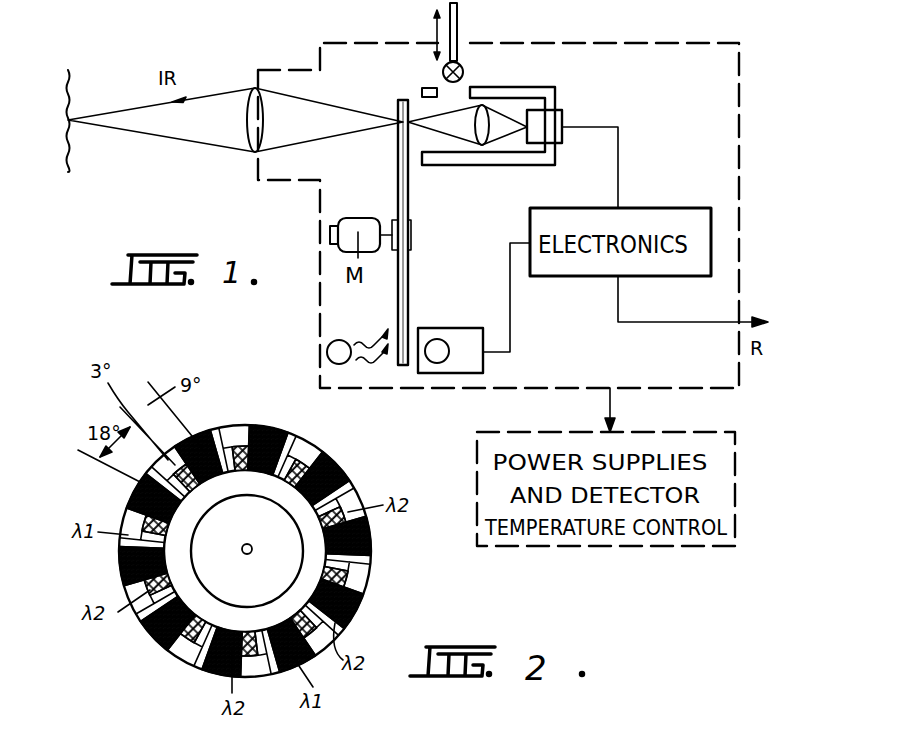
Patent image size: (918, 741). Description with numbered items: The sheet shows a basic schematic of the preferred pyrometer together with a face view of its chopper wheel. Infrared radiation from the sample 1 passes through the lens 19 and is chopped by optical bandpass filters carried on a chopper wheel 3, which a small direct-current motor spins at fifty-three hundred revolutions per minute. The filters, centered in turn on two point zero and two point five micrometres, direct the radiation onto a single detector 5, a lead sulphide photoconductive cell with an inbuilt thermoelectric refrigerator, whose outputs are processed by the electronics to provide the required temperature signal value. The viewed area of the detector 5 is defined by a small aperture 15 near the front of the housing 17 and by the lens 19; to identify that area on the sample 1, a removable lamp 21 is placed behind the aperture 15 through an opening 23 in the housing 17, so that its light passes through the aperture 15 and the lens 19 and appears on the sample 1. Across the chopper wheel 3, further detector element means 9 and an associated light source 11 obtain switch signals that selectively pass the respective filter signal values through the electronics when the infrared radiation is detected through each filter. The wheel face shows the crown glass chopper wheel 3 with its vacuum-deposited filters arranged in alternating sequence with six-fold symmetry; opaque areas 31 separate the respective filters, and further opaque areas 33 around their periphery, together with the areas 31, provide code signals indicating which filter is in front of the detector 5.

In FIG. 1, the sample 1 is at (72, 148).
In FIG. 1, the lens 19 is at (250, 122).
In FIG. 1, the aperture 15 is at (415, 110).
In FIG. 1, the chopper wheel 3 is at (402, 275).
In FIG. 2, the chopper wheel 3 is at (252, 594).
In FIG. 1, the removable lamp 21 is at (462, 27).
In FIG. 1, the opening 23 is at (445, 102).
In FIG. 1, the housing 17 is at (460, 165).
In FIG. 1, the detector 5 is at (555, 125).
In FIG. 1, the detector element means 9 is at (450, 375).
In FIG. 1, the light source 11 is at (363, 365).
In FIG. 2, the opaque areas 31 is at (280, 477).
In FIG. 2, the further opaque areas 33 is at (300, 478).